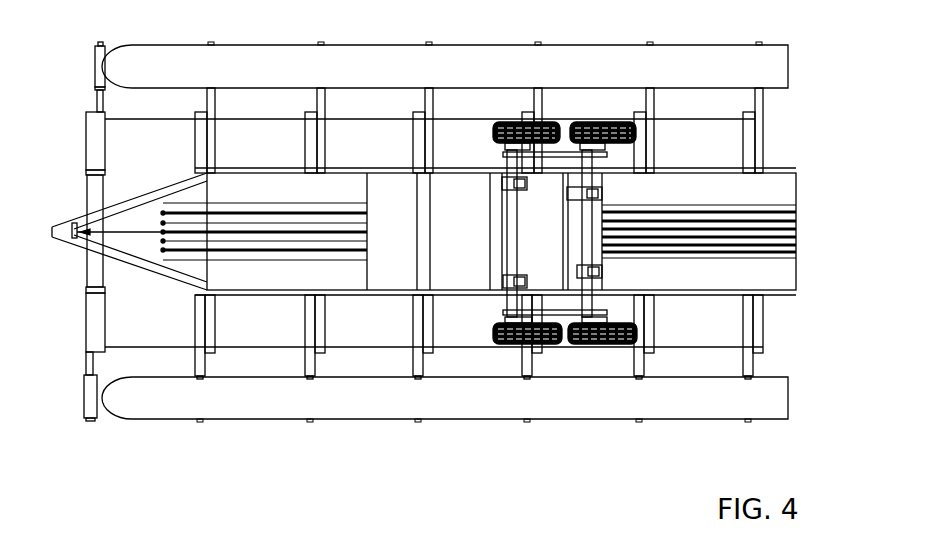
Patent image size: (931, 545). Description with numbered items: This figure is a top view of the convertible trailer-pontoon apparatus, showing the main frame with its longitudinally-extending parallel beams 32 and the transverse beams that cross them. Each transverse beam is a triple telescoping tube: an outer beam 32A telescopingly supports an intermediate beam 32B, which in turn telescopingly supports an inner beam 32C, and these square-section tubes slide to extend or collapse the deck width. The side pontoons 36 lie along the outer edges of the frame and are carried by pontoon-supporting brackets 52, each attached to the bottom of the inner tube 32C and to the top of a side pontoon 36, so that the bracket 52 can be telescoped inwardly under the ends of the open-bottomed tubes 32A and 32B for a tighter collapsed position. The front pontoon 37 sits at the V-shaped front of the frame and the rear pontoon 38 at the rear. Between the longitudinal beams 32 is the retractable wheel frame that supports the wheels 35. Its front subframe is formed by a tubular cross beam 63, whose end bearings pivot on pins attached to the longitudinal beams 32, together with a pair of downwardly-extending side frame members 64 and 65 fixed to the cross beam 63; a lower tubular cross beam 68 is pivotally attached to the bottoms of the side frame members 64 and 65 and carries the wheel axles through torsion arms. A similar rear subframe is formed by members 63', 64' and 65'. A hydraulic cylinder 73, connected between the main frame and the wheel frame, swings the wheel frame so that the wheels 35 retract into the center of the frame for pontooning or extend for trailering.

The longitudinally-extending parallel beams 32 is at (84, 138).
The outer beams 32A is at (93, 280).
The intermediate beam 32B is at (85, 338).
The inner beam 32C is at (90, 422).
The wheels 35 is at (580, 340).
The side pontoons 36 is at (788, 70).
The front pontoon 37 is at (118, 238).
The rear pontoon 38 is at (792, 254).
The pontoon-supporting bracket 52 is at (87, 405).
The tubular cross beam 63 is at (493, 371).
The tubular cross beam 63' is at (645, 318).
The side frame member 64 is at (546, 320).
The side frame member 64' is at (630, 368).
The side frame member 65 is at (558, 159).
The side frame member 65' is at (582, 159).
The lower tubular cross beam 68 is at (521, 262).
The hydraulic cylinder 73 is at (548, 330).